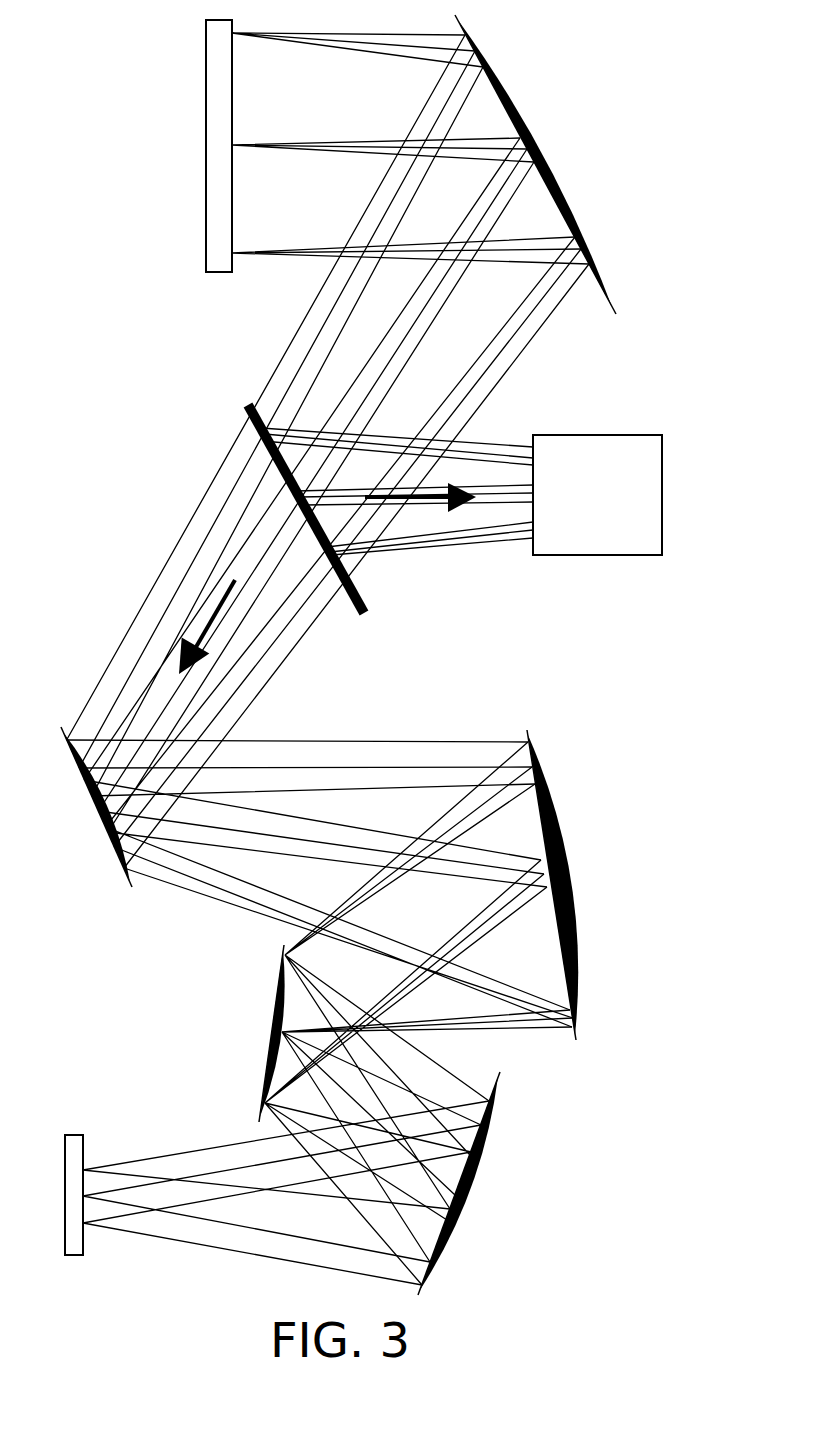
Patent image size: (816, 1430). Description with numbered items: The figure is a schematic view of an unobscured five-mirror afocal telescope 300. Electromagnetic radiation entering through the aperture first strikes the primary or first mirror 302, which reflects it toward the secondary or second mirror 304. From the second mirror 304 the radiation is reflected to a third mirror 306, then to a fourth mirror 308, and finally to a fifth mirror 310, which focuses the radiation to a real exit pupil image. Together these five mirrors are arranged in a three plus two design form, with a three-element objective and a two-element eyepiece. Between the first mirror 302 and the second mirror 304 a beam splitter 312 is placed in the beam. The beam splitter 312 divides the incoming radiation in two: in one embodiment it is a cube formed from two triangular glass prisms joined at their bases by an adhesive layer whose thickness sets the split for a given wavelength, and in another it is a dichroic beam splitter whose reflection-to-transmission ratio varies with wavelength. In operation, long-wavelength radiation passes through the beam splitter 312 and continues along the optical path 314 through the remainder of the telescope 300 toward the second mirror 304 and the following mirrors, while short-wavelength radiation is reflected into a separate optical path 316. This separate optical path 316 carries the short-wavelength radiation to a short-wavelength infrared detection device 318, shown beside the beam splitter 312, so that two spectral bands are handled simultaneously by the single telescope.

The unobscured five-mirror afocal telescope 300 is at (106, 70).
The first mirror 302 is at (535, 147).
The second mirror 304 is at (87, 792).
The third mirror 306 is at (576, 912).
The fourth mirror 308 is at (266, 1032).
The fifth mirror 310 is at (488, 1128).
The beam splitter 312 is at (270, 458).
The optical path 314 is at (215, 619).
The separate optical path 316 is at (408, 503).
The short-wavelength infrared (SWIR) detection device 318 is at (607, 433).